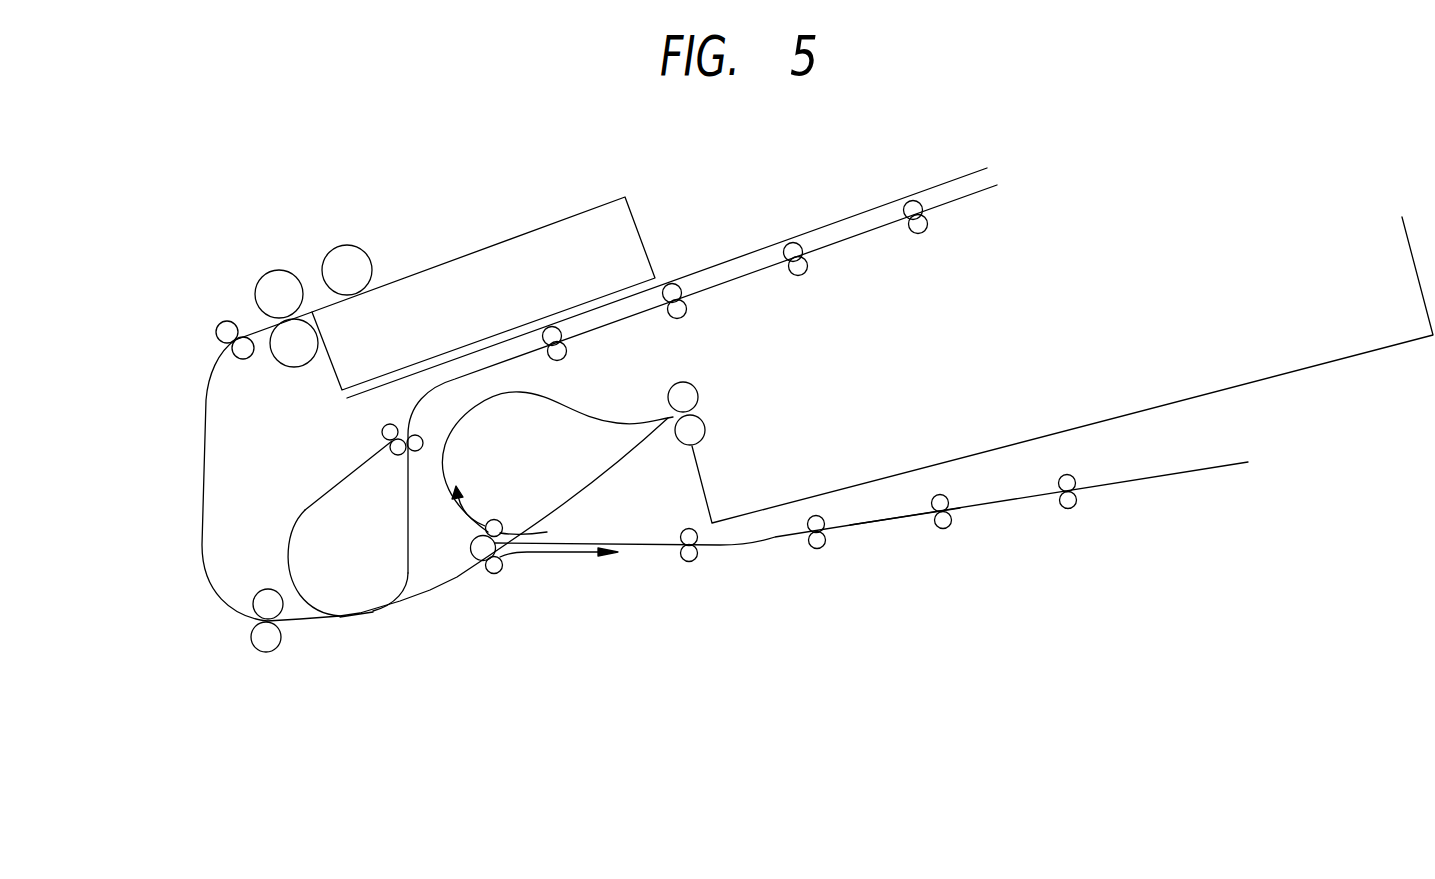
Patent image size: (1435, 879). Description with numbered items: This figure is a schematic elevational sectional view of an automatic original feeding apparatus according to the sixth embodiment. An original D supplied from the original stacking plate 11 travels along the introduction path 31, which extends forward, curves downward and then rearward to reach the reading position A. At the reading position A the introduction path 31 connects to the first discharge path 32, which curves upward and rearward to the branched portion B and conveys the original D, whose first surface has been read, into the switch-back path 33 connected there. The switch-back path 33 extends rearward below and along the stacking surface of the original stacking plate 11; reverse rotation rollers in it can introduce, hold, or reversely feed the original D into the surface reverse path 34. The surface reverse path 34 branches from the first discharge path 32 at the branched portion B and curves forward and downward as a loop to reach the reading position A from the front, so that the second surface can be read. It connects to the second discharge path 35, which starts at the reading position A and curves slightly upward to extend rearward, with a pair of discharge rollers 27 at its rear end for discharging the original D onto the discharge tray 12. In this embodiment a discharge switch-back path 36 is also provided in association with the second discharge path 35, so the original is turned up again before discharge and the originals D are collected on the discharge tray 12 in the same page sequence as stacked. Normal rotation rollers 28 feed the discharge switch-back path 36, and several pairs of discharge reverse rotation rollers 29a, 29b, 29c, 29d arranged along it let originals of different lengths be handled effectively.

The original stacking plate 11 is at (698, 270).
The discharge tray 12 is at (870, 484).
The discharge rollers 27 is at (698, 397).
The normal rotation rollers 28 is at (474, 557).
The discharge reverse rotation rollers 29a is at (692, 562).
The discharge reverse rotation rollers 29b is at (818, 549).
The discharge reverse rotation rollers 29c is at (945, 529).
The discharge reverse rotation rollers 29d is at (1070, 509).
The introduction path 31 is at (202, 452).
The first discharge path 32 is at (407, 573).
The switch-back path 33 is at (765, 269).
The surface reverse path 34 is at (337, 486).
The second discharge path 35 is at (604, 467).
The discharge switch-back path 36 is at (900, 519).
The original D is at (495, 254).
The reading position A is at (373, 616).
The branched portion B is at (396, 424).